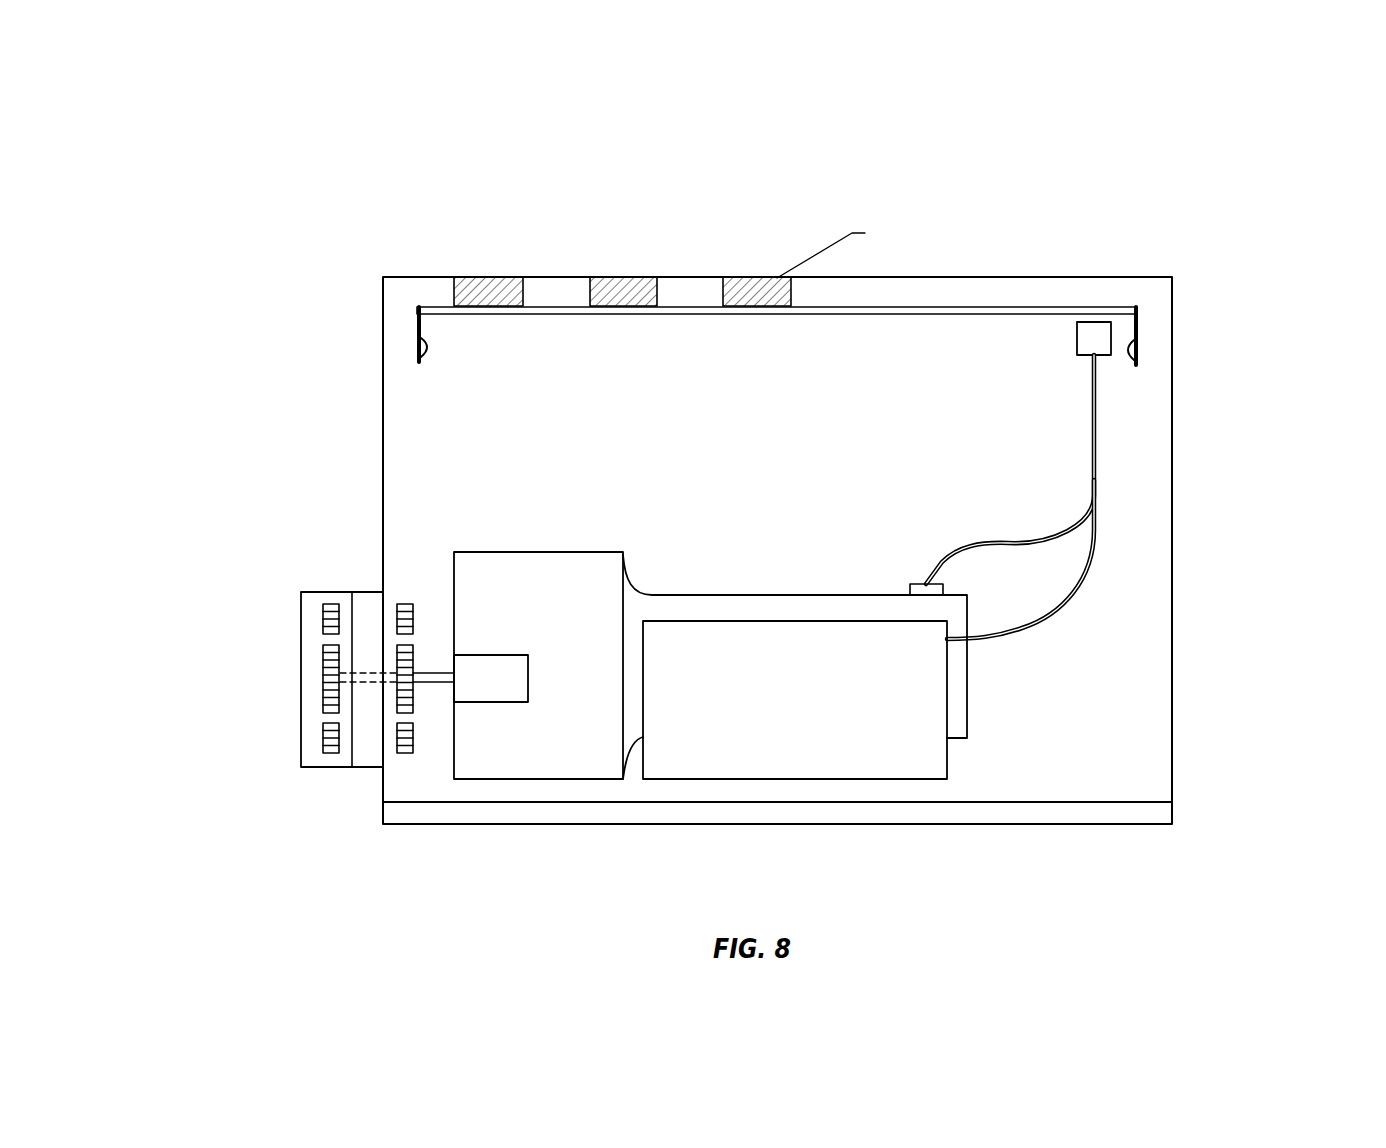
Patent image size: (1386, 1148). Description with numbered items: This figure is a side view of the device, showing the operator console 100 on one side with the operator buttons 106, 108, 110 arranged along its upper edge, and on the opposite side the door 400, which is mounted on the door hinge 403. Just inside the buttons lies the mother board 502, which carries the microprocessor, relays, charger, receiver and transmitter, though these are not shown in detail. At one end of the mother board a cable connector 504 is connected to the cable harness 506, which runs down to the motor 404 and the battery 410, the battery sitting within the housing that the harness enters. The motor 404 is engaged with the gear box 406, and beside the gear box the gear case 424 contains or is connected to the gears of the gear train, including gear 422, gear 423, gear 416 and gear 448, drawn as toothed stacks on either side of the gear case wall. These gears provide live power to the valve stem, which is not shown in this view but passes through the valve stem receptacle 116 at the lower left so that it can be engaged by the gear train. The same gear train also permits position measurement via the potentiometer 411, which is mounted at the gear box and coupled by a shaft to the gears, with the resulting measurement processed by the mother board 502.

The operator console 100 is at (423, 233).
The operator button 106 is at (508, 278).
The operator button 108 is at (622, 278).
The operator button 110 is at (757, 278).
The mother board 502 is at (537, 313).
The cable connector 504 is at (1111, 340).
The cable harness 506 is at (1094, 415).
The motor 404 is at (742, 595).
The battery 410 is at (820, 730).
The gear box 406 is at (560, 615).
The potentiometer 411 is at (528, 680).
The gear case 424 is at (333, 592).
The gear 416 is at (323, 610).
The gear 4 448 is at (323, 653).
The gear 423 is at (413, 706).
The gear 422 is at (412, 756).
The valve stem receptacle 116 is at (323, 771).
The door 400 is at (970, 824).
The door hinge 403 is at (1172, 824).